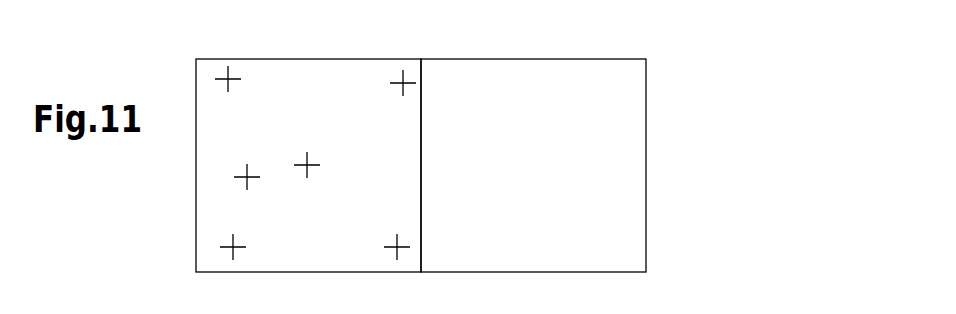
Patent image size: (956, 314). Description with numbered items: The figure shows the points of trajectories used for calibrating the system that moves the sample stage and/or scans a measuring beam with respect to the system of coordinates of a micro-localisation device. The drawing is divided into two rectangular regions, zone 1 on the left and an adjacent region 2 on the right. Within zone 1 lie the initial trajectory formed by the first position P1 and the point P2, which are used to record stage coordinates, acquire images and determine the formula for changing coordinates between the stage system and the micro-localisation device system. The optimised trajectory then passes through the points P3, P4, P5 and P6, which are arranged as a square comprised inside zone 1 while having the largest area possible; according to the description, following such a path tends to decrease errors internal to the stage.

The zone 1 is at (196, 204).
The second region / adjacent area 2 is at (625, 132).
The first position P1 is at (260, 188).
The point P2 is at (320, 156).
The localised measuring point P3 is at (254, 248).
The point P4 is at (241, 89).
The point P5 is at (392, 94).
The point P6 is at (385, 237).